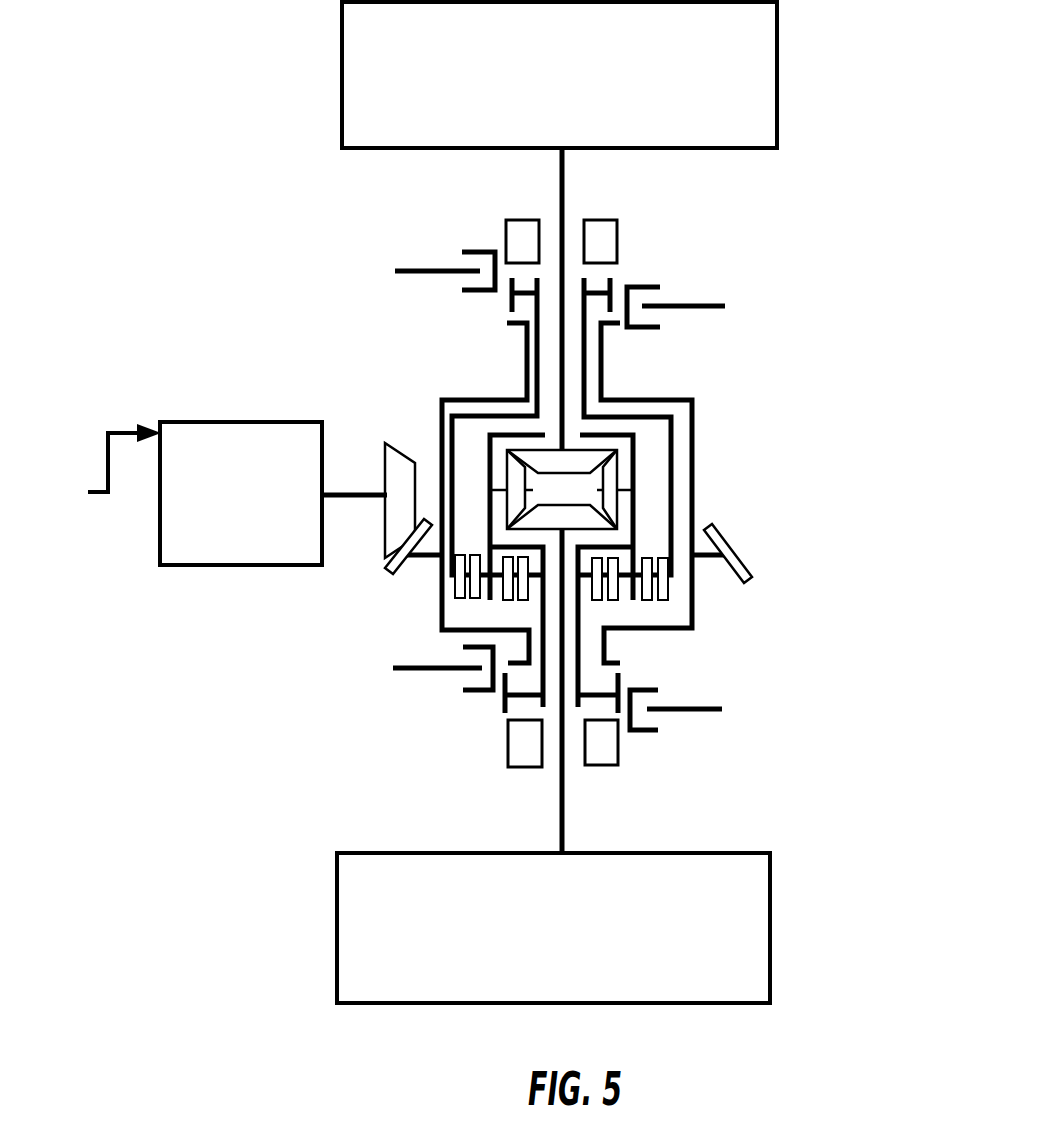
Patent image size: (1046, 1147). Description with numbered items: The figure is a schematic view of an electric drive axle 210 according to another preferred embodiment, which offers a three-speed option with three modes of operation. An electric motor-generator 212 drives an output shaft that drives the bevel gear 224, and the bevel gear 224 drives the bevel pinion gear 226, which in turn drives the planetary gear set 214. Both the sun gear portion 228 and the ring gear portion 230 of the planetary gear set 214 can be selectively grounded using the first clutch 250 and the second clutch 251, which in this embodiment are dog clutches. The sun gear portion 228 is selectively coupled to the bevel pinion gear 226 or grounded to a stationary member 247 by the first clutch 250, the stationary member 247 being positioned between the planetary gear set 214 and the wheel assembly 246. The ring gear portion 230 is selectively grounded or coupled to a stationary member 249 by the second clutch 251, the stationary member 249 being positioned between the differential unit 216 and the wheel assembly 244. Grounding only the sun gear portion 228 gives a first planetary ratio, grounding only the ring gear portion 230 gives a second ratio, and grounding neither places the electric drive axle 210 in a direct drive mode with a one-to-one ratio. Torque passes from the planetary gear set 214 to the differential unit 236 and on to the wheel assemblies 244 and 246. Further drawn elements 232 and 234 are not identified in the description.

The electric drive axle 210 is at (903, 455).
The electric motor-generator 212 is at (187, 493).
The planetary gear set 214 is at (658, 540).
The differential unit 216 is at (681, 388).
The bevel gear 224 is at (403, 453).
The bevel pinion gear 226 is at (386, 577).
The sun gear portion 228 is at (523, 601).
The ring gear portion 230 is at (663, 602).
The sleeve 232 is at (632, 601).
The inner wall 234 is at (672, 458).
The differential unit 236 is at (586, 504).
The wheel assembly 244 is at (581, 86).
The wheel assembly 246 is at (581, 938).
The stationary member 247 is at (607, 758).
The stationary member 249 is at (600, 226).
The first clutch 250 is at (758, 696).
The second clutch 251 is at (455, 236).